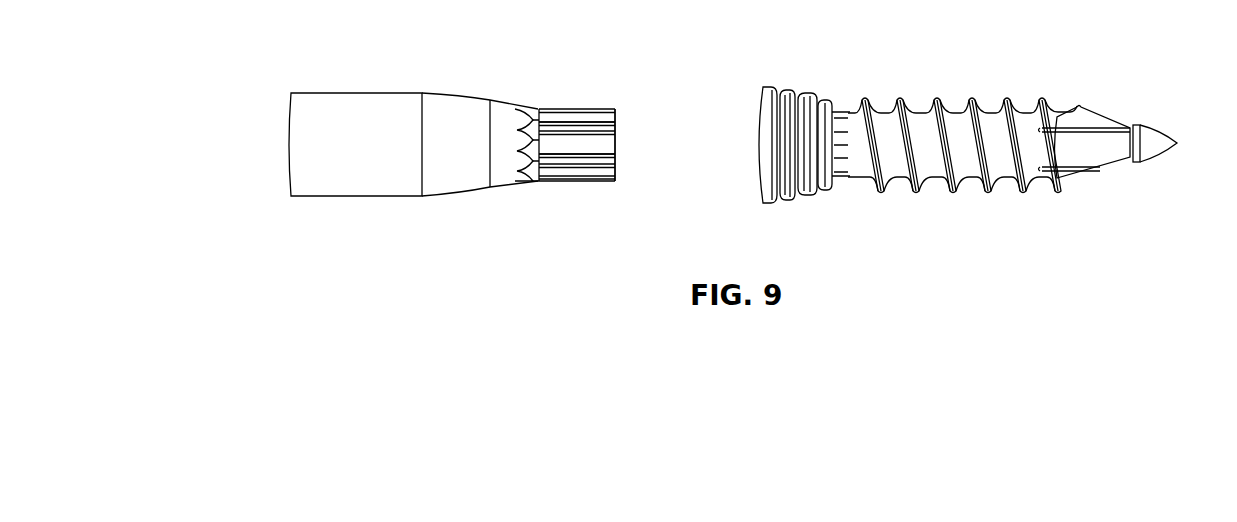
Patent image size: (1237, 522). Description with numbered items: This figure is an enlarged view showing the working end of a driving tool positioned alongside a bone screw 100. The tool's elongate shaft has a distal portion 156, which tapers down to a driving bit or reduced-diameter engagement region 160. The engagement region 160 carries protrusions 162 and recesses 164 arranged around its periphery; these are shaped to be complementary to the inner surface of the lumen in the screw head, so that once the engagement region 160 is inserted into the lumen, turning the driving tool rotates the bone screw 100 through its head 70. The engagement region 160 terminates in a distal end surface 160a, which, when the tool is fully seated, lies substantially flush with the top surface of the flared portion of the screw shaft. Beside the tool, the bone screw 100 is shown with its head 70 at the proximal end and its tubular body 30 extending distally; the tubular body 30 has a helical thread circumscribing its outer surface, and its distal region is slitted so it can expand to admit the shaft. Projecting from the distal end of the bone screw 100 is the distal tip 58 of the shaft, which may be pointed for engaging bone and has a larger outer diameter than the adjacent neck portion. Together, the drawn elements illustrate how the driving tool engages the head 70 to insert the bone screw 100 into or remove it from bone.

The distal portion 156 is at (462, 178).
The engagement region 160 is at (556, 100).
The protrusions 162 is at (605, 128).
The recesses 164 is at (605, 148).
The distal end surface 160a is at (622, 174).
The bone screw 100 is at (987, 148).
The head 70 is at (808, 77).
The tubular body 30 is at (956, 94).
The distal tip 58 is at (1153, 140).